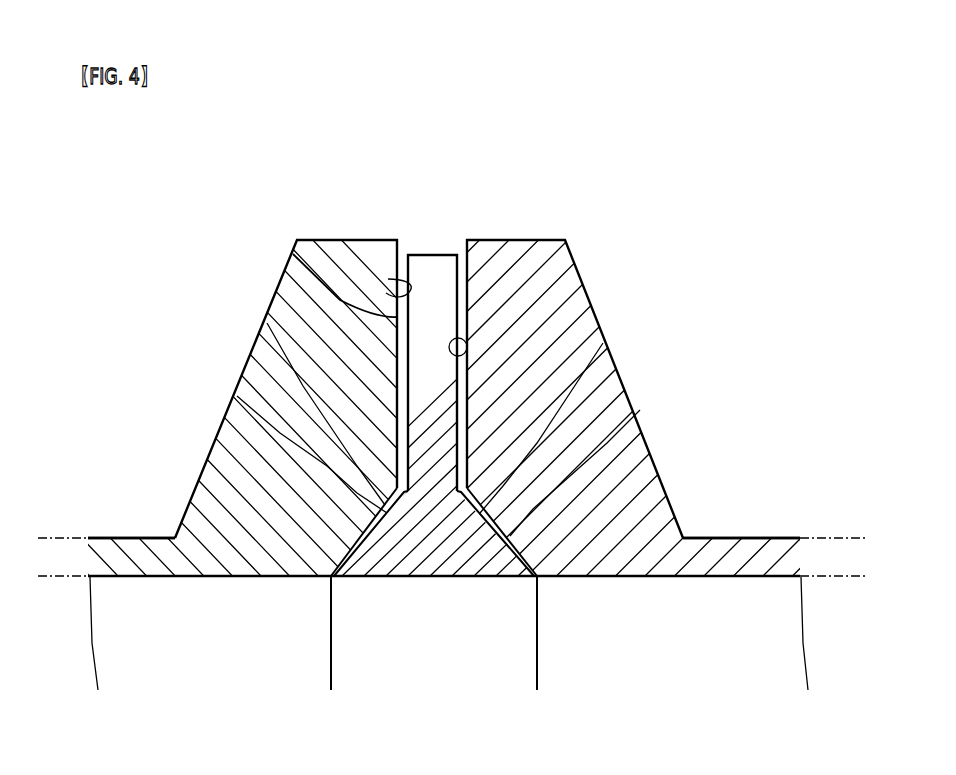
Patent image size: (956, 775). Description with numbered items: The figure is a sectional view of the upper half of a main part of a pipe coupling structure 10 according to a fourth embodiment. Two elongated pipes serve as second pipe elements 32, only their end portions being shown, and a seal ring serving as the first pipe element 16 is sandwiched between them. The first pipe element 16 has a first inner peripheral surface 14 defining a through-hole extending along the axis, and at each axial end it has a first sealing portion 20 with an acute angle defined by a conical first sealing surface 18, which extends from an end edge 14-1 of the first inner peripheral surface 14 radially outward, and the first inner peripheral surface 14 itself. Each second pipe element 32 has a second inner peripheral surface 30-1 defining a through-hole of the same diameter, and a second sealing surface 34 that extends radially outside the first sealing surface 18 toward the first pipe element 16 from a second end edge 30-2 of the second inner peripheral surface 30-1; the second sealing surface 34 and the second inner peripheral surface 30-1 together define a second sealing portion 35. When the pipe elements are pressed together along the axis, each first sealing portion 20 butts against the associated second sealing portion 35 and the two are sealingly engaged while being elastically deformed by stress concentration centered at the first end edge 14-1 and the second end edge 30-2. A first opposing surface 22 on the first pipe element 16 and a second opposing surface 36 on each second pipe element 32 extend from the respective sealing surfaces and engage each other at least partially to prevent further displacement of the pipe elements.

The pipe coupling structure 10 is at (545, 132).
The first inner peripheral surface 14 is at (442, 578).
The first end edge 14-1 is at (328, 657).
The first pipe element 16 is at (433, 222).
The first sealing surface 18 is at (267, 323).
The first sealing portion 20 is at (360, 568).
The first opposing surface 22 is at (388, 279).
The second inner peripheral surface 30-1 is at (185, 582).
The second end edge 30-2 is at (333, 635).
The second pipe element 32 is at (155, 483).
The second sealing surface 34 is at (237, 396).
The second sealing portion 35 is at (327, 560).
The second opposing surface 36 is at (293, 252).